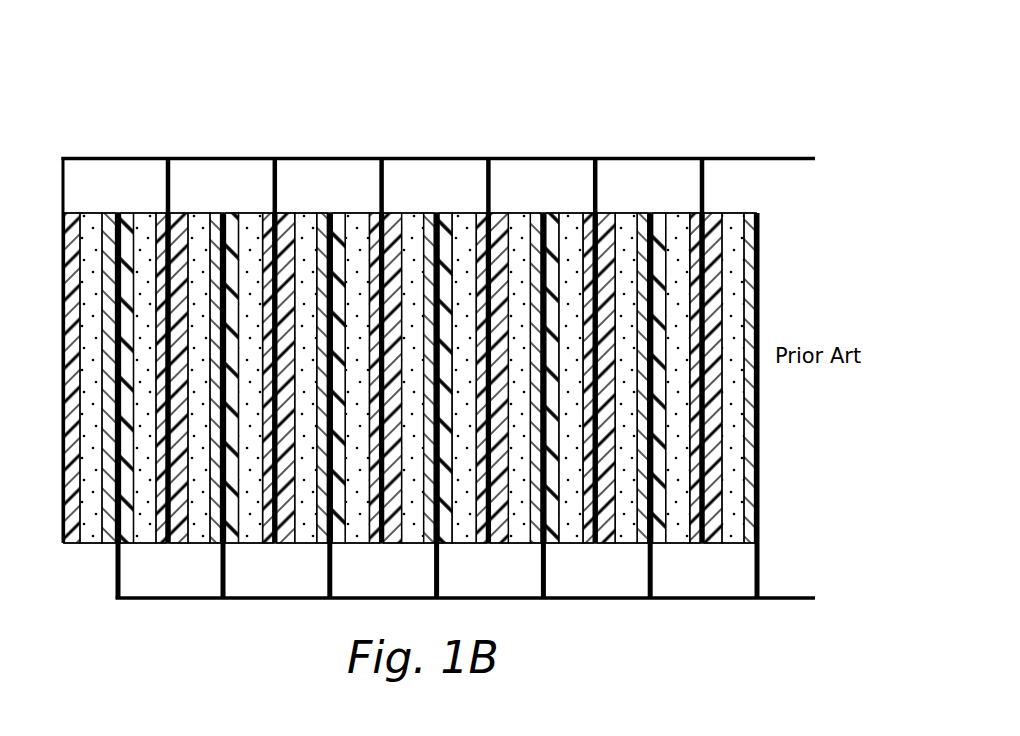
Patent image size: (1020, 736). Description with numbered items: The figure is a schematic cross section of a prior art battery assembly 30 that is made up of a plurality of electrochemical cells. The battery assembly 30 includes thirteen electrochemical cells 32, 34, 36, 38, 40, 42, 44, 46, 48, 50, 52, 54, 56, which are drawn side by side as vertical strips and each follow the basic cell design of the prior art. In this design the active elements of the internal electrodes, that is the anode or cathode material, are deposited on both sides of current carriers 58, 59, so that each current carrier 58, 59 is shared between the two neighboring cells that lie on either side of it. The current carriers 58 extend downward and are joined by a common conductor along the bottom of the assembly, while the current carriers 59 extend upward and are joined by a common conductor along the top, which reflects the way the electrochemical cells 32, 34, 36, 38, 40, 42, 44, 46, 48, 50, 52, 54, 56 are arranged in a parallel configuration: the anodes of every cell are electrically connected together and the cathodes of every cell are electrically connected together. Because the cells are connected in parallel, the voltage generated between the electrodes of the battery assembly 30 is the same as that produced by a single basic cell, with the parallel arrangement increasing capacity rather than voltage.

The battery assembly 30 is at (658, 48).
The electrochemical cell 32 is at (92, 193).
The electrochemical cell 34 is at (147, 193).
The electrochemical cell 36 is at (198, 193).
The electrochemical cell 38 is at (252, 193).
The electrochemical cell 40 is at (305, 193).
The electrochemical cell 42 is at (360, 195).
The electrochemical cell 44 is at (412, 195).
The electrochemical cell 46 is at (467, 195).
The electrochemical cell 48 is at (518, 195).
The electrochemical cell 50 is at (572, 195).
The electrochemical cell 52 is at (625, 195).
The electrochemical cell 54 is at (679, 195).
The electrochemical cell 56 is at (733, 195).
The current carrier 58 is at (117, 565).
The current carrier 59 is at (168, 192).